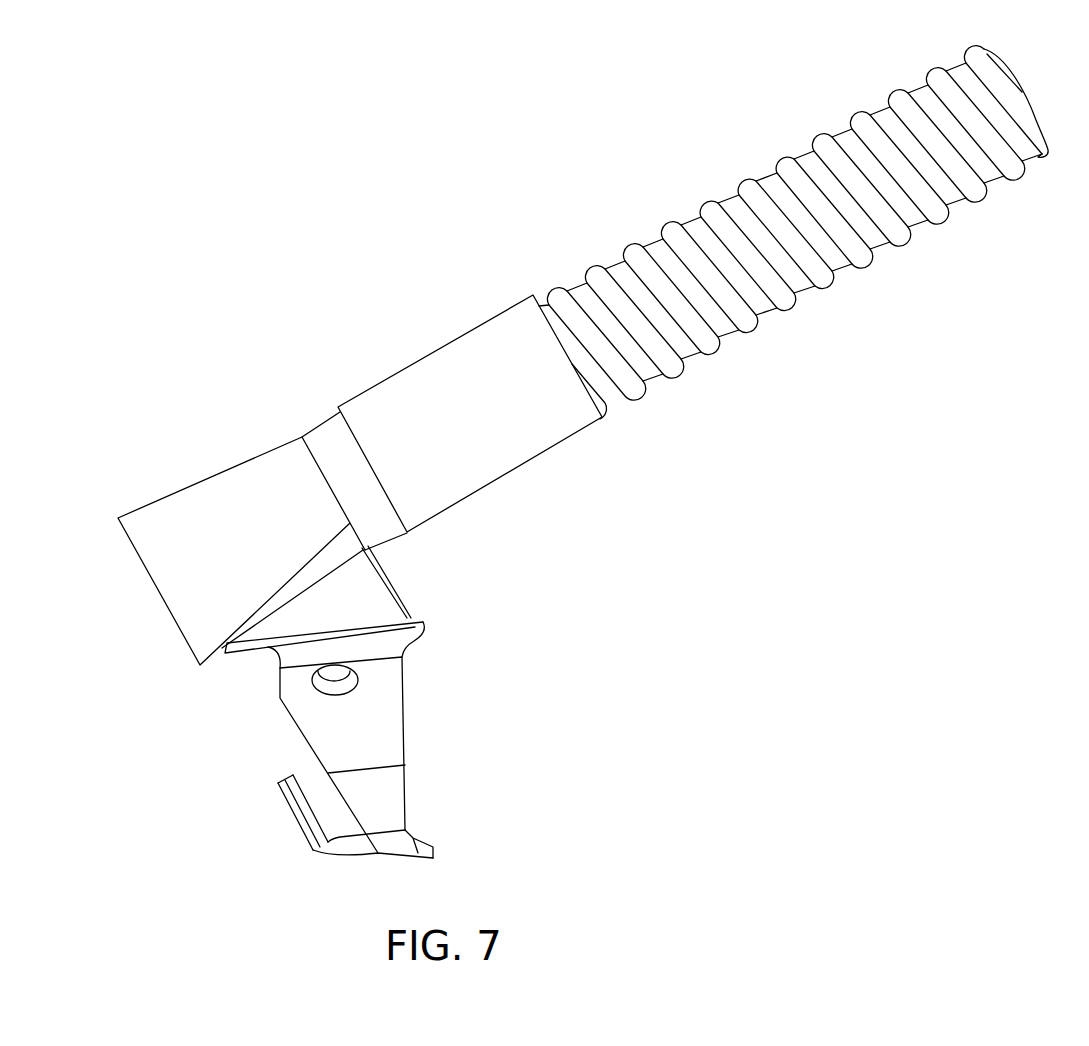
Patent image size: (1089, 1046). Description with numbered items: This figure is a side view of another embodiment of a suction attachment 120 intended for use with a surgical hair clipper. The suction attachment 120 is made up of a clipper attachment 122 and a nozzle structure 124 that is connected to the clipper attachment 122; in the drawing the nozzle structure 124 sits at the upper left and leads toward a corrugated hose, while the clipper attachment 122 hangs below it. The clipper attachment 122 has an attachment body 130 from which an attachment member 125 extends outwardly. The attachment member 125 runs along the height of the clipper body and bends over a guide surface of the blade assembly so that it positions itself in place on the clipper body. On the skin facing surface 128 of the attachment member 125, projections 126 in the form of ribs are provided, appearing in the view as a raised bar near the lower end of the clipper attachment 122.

The suction attachment 120 is at (583, 452).
The clipper attachment 122 is at (349, 740).
The nozzle structure 124 is at (217, 487).
The attachment member 125 is at (320, 812).
The projections 126 is at (292, 817).
The skin facing surface 128 is at (287, 797).
The attachment body 130 is at (398, 817).